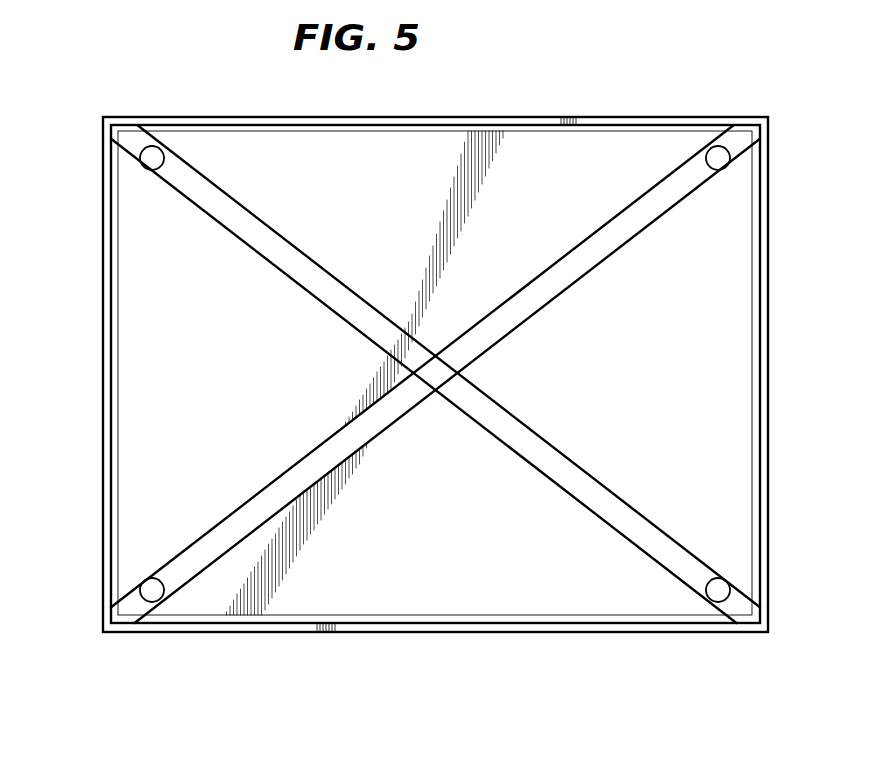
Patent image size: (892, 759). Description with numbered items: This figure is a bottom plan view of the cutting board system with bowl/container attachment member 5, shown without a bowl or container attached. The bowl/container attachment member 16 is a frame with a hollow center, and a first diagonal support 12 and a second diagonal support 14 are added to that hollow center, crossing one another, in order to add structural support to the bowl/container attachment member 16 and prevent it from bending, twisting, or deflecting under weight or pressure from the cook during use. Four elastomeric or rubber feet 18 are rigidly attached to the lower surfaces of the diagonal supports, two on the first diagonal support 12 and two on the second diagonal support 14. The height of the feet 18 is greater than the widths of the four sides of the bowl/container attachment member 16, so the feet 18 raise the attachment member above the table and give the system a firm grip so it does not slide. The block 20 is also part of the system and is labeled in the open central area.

The cutting board system with bowl/container attachment member 5 is at (119, 74).
The first diagonal support 12 is at (323, 269).
The second diagonal support 14 is at (560, 260).
The bowl/container attachment member 16 is at (238, 117).
The elastomeric or rubber foot 18 is at (152, 158).
The block 20 is at (460, 506).